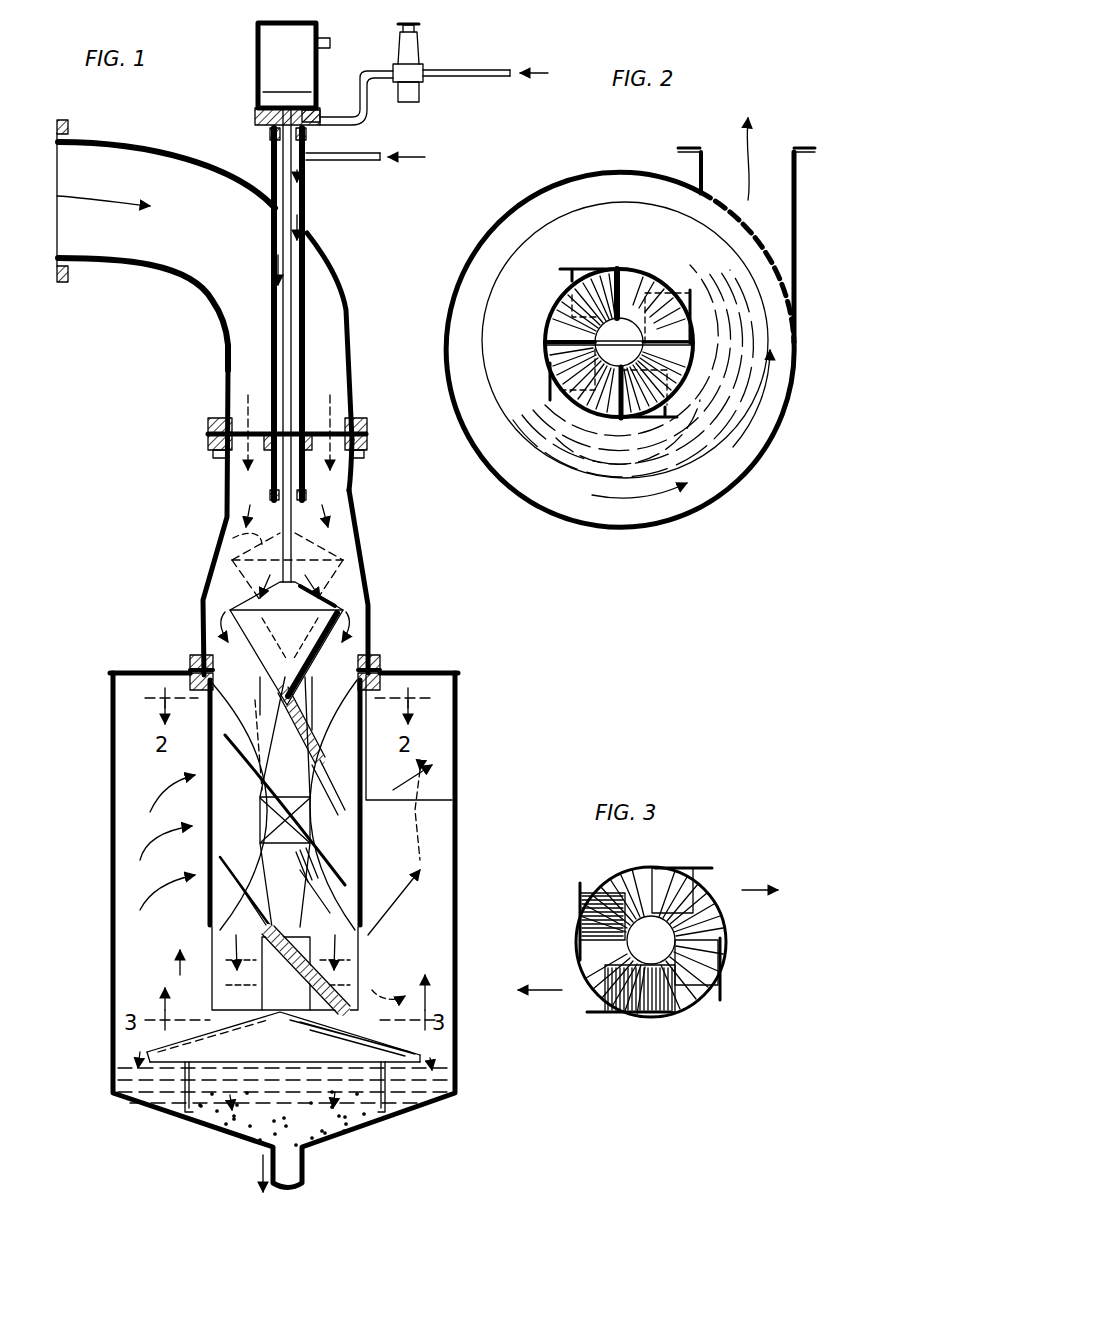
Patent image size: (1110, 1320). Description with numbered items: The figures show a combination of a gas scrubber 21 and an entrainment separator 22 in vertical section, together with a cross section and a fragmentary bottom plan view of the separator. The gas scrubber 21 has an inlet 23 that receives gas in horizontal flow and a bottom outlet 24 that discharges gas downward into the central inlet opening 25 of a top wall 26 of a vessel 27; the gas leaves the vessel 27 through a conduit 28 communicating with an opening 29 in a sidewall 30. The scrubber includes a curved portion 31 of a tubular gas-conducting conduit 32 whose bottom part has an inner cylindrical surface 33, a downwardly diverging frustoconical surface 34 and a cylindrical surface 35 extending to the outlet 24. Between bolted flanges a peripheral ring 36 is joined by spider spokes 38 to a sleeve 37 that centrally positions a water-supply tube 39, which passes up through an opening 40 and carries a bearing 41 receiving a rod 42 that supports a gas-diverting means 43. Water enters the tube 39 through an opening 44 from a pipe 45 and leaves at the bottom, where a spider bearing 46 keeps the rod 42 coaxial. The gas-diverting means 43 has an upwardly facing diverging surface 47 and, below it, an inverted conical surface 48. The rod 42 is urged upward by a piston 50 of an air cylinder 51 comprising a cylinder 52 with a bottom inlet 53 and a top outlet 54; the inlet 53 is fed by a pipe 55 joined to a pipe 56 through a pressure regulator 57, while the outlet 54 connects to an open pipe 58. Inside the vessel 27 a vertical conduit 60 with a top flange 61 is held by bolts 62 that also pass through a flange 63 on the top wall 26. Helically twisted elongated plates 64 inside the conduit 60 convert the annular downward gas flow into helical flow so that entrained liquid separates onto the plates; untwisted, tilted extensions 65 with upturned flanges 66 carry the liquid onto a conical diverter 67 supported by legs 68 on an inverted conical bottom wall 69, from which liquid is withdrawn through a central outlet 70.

In FIG. 1, the gas scrubber 21 is at (182, 136).
In FIG. 1, the entrainment separator 22 is at (432, 650).
In FIG. 1, the inlet 23 is at (62, 145).
In FIG. 1, the bottom outlet 24 is at (368, 652).
In FIG. 1, the central inlet opening 25 is at (225, 668).
In FIG. 1, the top wall 26 is at (128, 670).
In FIG. 1, the vessel 27 is at (103, 790).
In FIG. 1, the conduit 28 is at (452, 765).
In FIG. 2, the conduit 28 is at (797, 228).
In FIG. 2, the opening 29 is at (705, 190).
In FIG. 1, the sidewall 30 is at (110, 845).
In FIG. 2, the sidewall 30 is at (700, 504).
In FIG. 1, the arcuate or curved portion 31 is at (182, 282).
In FIG. 1, the gas-conducting conduit 32 is at (345, 288).
In FIG. 1, the inner cylindrical surface portion 33 is at (332, 478).
In FIG. 1, the frustoconical surface 34 is at (343, 528).
In FIG. 1, the cylindrical surface 35 is at (213, 603).
In FIG. 1, the peripheral ring 36 is at (368, 434).
In FIG. 1, the sleeve 37 is at (265, 410).
In FIG. 1, the spider spokes 38 is at (235, 442).
In FIG. 1, the water-supply tube 39 is at (307, 343).
In FIG. 1, the opening 40 is at (270, 221).
In FIG. 1, the bearing 41 is at (270, 137).
In FIG. 1, the rod 42 is at (306, 224).
In FIG. 1, the gas-diverting means 43 is at (338, 598).
In FIG. 1, the opening 44 is at (308, 140).
In FIG. 1, the pipe 45 is at (328, 163).
In FIG. 1, the spider bearing 46 is at (281, 490).
In FIG. 1, the upwardly facing surface 47 is at (232, 552).
In FIG. 1, the inverted conical surface 48 is at (347, 622).
In FIG. 1, the piston 50 is at (300, 76).
In FIG. 1, the air cylinder 51 is at (256, 78).
In FIG. 1, the cylinder 52 is at (259, 58).
In FIG. 1, the bottom end inlet 53 is at (316, 116).
In FIG. 1, the outlet 54 is at (314, 40).
In FIG. 1, the pipe 55 is at (362, 124).
In FIG. 1, the pipe 56 is at (457, 70).
In FIG. 1, the pressure regulator 57 is at (412, 44).
In FIG. 1, the pipe 58 is at (330, 36).
In FIG. 1, the vertical conduit 60 is at (208, 757).
In FIG. 2, the vertical conduit 60 is at (619, 343).
In FIG. 3, the vertical conduit 60 is at (575, 956).
In FIG. 1, the top flange 61 is at (195, 676).
In FIG. 1, the bolts 62 is at (196, 655).
In FIG. 1, the flange 63 is at (188, 667).
In FIG. 1, the elongated plates 64 is at (284, 803).
In FIG. 2, the elongated plates 64 is at (632, 292).
In FIG. 3, the elongated plates 64 is at (655, 1002).
In FIG. 1, the extensions 65 is at (256, 985).
In FIG. 2, the extensions 65 is at (562, 402).
In FIG. 1, the flanges 66 is at (212, 956).
In FIG. 2, the flanges 66 is at (575, 268).
In FIG. 3, the flanges 66 is at (700, 868).
In FIG. 1, the conical diverter 67 is at (268, 1018).
In FIG. 2, the conical diverter 67 is at (527, 270).
In FIG. 1, the legs 68 is at (182, 1084).
In FIG. 1, the inverted conical bottom wall 69 is at (232, 1127).
In FIG. 1, the central outlet 70 is at (304, 1166).